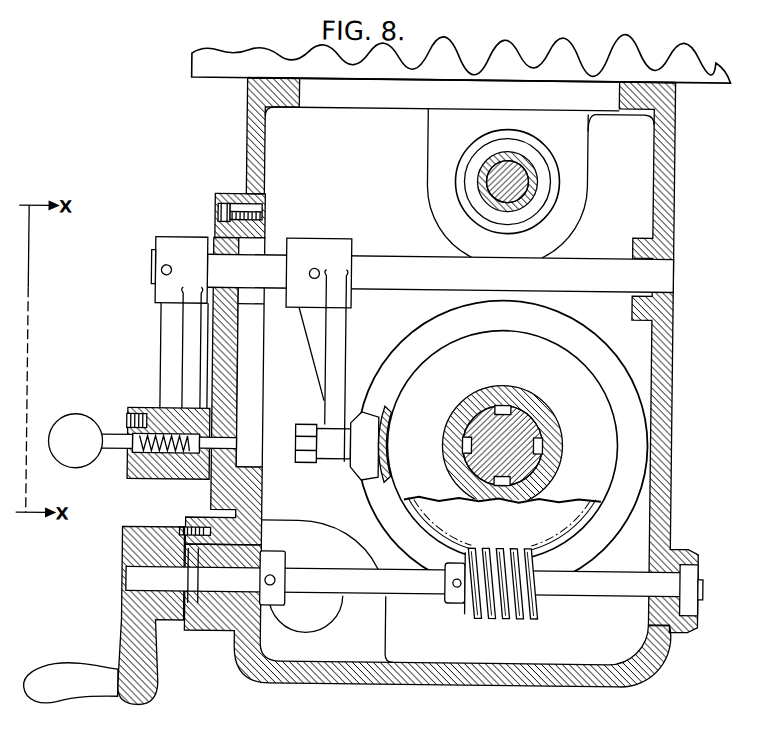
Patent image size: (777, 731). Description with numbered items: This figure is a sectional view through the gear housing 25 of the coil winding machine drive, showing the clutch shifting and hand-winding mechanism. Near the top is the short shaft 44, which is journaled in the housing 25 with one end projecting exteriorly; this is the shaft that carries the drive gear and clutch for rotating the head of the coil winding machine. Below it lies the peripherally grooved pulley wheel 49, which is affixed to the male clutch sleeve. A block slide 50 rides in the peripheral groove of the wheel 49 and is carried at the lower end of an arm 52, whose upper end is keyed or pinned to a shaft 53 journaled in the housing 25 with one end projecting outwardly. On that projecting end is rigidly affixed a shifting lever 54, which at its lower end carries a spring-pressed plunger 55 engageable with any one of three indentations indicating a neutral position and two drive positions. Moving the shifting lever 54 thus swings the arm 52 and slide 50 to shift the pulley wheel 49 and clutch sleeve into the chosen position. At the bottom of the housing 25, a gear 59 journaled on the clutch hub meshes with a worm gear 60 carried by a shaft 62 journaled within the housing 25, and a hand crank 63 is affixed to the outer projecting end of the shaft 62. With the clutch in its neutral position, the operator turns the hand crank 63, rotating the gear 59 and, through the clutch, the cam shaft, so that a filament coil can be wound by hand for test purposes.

The housing 25 is at (678, 250).
The short shaft 44 is at (533, 189).
The pulley wheel 49 is at (637, 394).
The block slide 50 is at (356, 471).
The arm 52 is at (347, 330).
The shaft 53 is at (399, 258).
The shifting lever 54 is at (159, 336).
The spring-pressed plunger 55 is at (75, 418).
The gear 59 is at (556, 521).
The worm gear 60 is at (529, 613).
The shaft 62 is at (612, 598).
The hand crank 63 is at (51, 670).